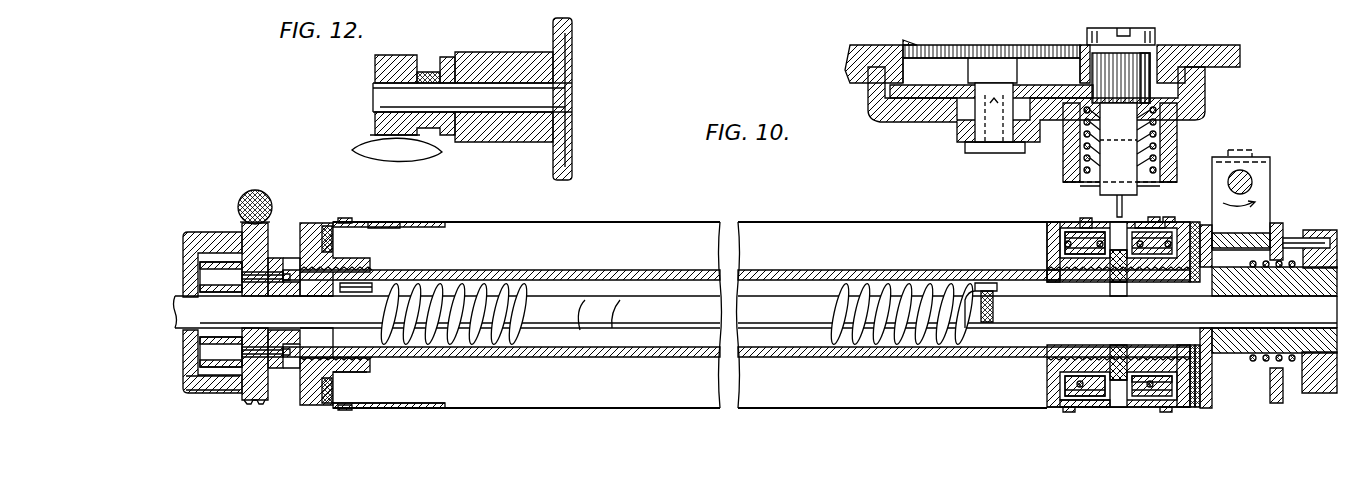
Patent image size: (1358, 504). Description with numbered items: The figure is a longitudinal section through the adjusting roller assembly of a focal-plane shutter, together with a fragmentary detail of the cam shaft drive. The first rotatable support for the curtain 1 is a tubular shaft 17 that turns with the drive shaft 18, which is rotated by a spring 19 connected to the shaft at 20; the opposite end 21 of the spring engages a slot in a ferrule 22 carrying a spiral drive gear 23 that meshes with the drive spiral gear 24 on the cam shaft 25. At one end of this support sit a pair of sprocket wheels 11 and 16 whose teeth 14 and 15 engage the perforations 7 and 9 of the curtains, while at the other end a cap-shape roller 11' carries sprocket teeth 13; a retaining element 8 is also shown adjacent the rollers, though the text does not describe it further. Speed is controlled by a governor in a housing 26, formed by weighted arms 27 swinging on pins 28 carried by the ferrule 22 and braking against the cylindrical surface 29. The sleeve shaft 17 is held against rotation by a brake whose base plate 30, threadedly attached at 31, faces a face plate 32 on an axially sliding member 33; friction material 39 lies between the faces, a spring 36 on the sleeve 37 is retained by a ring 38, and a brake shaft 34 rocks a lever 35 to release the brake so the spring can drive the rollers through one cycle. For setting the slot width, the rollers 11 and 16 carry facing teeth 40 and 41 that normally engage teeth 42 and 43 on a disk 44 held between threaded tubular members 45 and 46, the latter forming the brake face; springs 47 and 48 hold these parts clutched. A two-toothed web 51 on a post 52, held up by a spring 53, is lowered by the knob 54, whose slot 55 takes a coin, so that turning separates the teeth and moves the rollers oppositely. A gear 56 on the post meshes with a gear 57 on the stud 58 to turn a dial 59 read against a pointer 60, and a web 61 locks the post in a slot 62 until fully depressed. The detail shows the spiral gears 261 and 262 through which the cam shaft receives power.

In FIG. 10, the curtain 1 is at (660, 222).
In FIG. 10, the perforations 7 is at (405, 222).
In FIG. 10, the retaining ring 8 is at (346, 218).
In FIG. 10, the perforations 9 is at (321, 223).
In FIG. 10, the sprocket wheel 11 is at (1090, 301).
In FIG. 10, the cap-shape roller 11' is at (384, 205).
In FIG. 10, the sprocket teeth 13 is at (328, 226).
In FIG. 10, the teeth 14 is at (1080, 407).
In FIG. 10, the teeth 15 is at (1155, 217).
In FIG. 10, the sprocket wheel 16 is at (1188, 222).
In FIG. 10, the tubular shaft 17 is at (787, 270).
In FIG. 12, the shaft 18 is at (565, 97).
In FIG. 10, the shaft 18 is at (790, 300).
In FIG. 10, the spring 19 is at (500, 283).
In FIG. 10, the spring connection 20 is at (986, 283).
In FIG. 10, the spring end 21 is at (370, 283).
In FIG. 10, the ferrule 22 is at (292, 370).
In FIG. 10, the spiral drive gear 23 is at (258, 402).
In FIG. 10, the drive spiral gear 24 is at (262, 192).
In FIG. 10, the cam shaft 25 is at (271, 202).
In FIG. 12, the housing 26 is at (556, 30).
In FIG. 10, the housing 26 is at (224, 232).
In FIG. 10, the weighted arms 27 is at (184, 290).
In FIG. 10, the pins 28 is at (210, 262).
In FIG. 10, the cylindrical surface 29 is at (222, 392).
In FIG. 10, the base plate 30 is at (1190, 407).
In FIG. 10, the threaded attachment 31 is at (1120, 407).
In FIG. 10, the face plate 32 is at (1206, 408).
In FIG. 10, the axially sliding member 33 is at (1262, 365).
In FIG. 10, the brake shaft 34 is at (1252, 180).
In FIG. 10, the lever 35 is at (1255, 222).
In FIG. 10, the spring 36 is at (1295, 365).
In FIG. 10, the sleeve 37 is at (1234, 345).
In FIG. 10, the ring 38 is at (1315, 230).
In FIG. 10, the friction material 39 is at (1198, 408).
In FIG. 10, the facing teeth 40 is at (1110, 225).
In FIG. 10, the facing teeth 41 is at (1135, 232).
In FIG. 10, the teeth 42 is at (1112, 278).
In FIG. 10, the teeth 43 is at (1118, 284).
In FIG. 10, the disk 44 is at (1108, 407).
In FIG. 10, the threaded tubular member 45 is at (1050, 262).
In FIG. 10, the threaded tubular member 46 is at (1180, 408).
In FIG. 10, the spring 47 is at (1047, 238).
In FIG. 10, the spring 48 is at (1145, 407).
In FIG. 10, the web 51 is at (1115, 205).
In FIG. 10, the post 52 is at (1100, 125).
In FIG. 10, the spring 53 is at (1177, 130).
In FIG. 10, the knob 54 is at (1150, 30).
In FIG. 10, the slot 55 is at (1120, 34).
In FIG. 10, the gear 56 is at (1140, 90).
In FIG. 10, the gear 57 is at (885, 94).
In FIG. 10, the stud 58 is at (975, 134).
In FIG. 10, the dial 59 is at (945, 45).
In FIG. 10, the pointer 60 is at (907, 42).
In FIG. 10, the web 61 is at (1087, 176).
In FIG. 10, the slot 62 is at (1063, 182).
In FIG. 12, the spiral gear 261 is at (392, 55).
In FIG. 12, the spiral gear 262 is at (368, 138).